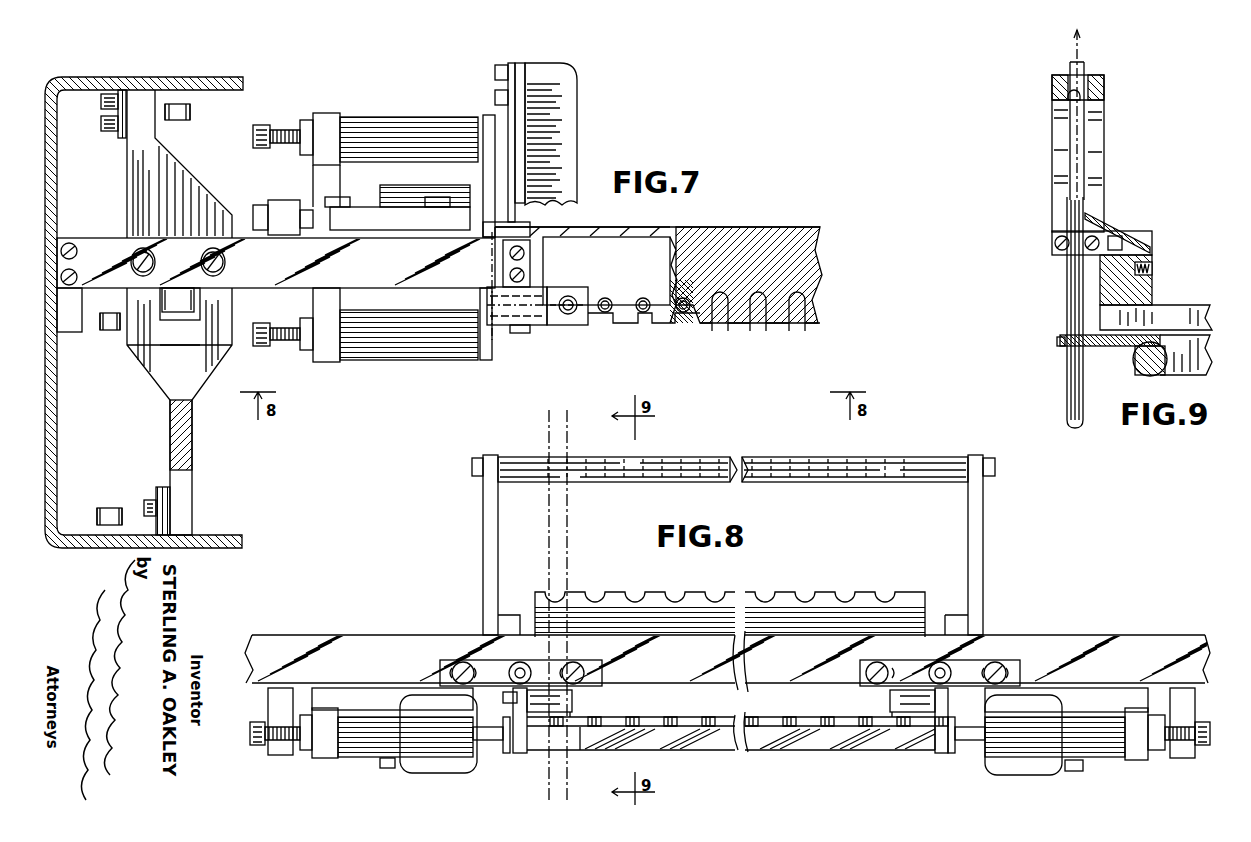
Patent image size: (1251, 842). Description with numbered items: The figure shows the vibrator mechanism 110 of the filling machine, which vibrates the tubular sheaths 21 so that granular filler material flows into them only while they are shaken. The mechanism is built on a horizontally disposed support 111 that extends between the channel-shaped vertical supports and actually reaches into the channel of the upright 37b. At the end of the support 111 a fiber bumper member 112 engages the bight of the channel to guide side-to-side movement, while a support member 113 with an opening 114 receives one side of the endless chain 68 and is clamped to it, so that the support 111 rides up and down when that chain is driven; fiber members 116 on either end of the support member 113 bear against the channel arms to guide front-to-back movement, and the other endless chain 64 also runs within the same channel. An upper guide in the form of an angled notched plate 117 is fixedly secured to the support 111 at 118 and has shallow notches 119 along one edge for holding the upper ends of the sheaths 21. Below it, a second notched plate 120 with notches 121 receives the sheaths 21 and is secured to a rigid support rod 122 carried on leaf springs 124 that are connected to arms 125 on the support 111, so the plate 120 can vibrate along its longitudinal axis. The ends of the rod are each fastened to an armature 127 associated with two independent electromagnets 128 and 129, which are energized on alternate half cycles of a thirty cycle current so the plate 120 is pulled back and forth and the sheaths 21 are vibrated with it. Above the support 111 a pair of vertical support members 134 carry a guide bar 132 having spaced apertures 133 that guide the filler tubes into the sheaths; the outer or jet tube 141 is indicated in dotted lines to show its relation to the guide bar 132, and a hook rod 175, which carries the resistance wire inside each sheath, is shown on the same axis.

In FIG. 7, the sheath 21 is at (590, 322).
In FIG. 8, the sheath 21 is at (548, 423).
In FIG. 9, the sheath 21 is at (1066, 306).
In FIG. 7, the channel-shaped vertical support 37b is at (240, 535).
In FIG. 7, the endless chain 64 is at (113, 330).
In FIG. 7, the endless chain 68 is at (192, 113).
In FIG. 7, the vibrator mechanism 110 is at (626, 344).
In FIG. 8, the vibrator mechanism 110 is at (841, 759).
In FIG. 7, the horizontally disposed support 111 is at (244, 246).
In FIG. 8, the horizontally disposed support 111 is at (328, 653).
In FIG. 9, the horizontally disposed support 111 is at (1152, 293).
In FIG. 7, the bumper member 112 is at (68, 332).
In FIG. 7, the support member 113 is at (174, 378).
In FIG. 7, the opening 114 is at (200, 303).
In FIG. 7, the fiber member 116 is at (121, 128).
In FIG. 7, the notched plate 117 is at (624, 246).
In FIG. 8, the notched plate 117 is at (764, 607).
In FIG. 9, the notched plate 117 is at (1102, 221).
In FIG. 9, the securing point 118 is at (1152, 267).
In FIG. 8, the shallow notch 119 is at (890, 596).
In FIG. 7, the notched plate 120 is at (814, 237).
In FIG. 8, the notched plate 120 is at (830, 717).
In FIG. 9, the notched plate 120 is at (1125, 347).
In FIG. 7, the notch 121 is at (724, 333).
In FIG. 8, the notch 121 is at (708, 715).
In FIG. 9, the notch 121 is at (1057, 340).
In FIG. 8, the rigid support rod 122 is at (750, 745).
In FIG. 9, the rigid support rod 122 is at (1140, 367).
In FIG. 7, the leaf spring 124 is at (511, 124).
In FIG. 9, the leaf spring 124 is at (1195, 367).
In FIG. 7, the arm 125 is at (560, 129).
In FIG. 8, the arm 125 is at (584, 706).
In FIG. 9, the arm 125 is at (1178, 312).
In FIG. 8, the armature 127 is at (471, 763).
In FIG. 8, the electromagnet 128 is at (380, 778).
In FIG. 8, the electromagnet 129 is at (1040, 703).
In FIG. 7, the guide bar 132 is at (548, 292).
In FIG. 8, the guide bar 132 is at (698, 463).
In FIG. 9, the guide bar 132 is at (1104, 85).
In FIG. 7, the spaced aperture 133 is at (600, 300).
In FIG. 8, the spaced aperture 133 is at (628, 464).
In FIG. 9, the spaced aperture 133 is at (1068, 103).
In FIG. 7, the vertical support member 134 is at (492, 336).
In FIG. 8, the vertical support member 134 is at (485, 506).
In FIG. 9, the vertical support member 134 is at (1097, 147).
In FIG. 9, the outer or jet tube 141 is at (1086, 67).
In FIG. 9, the hook rod 175 is at (1080, 52).